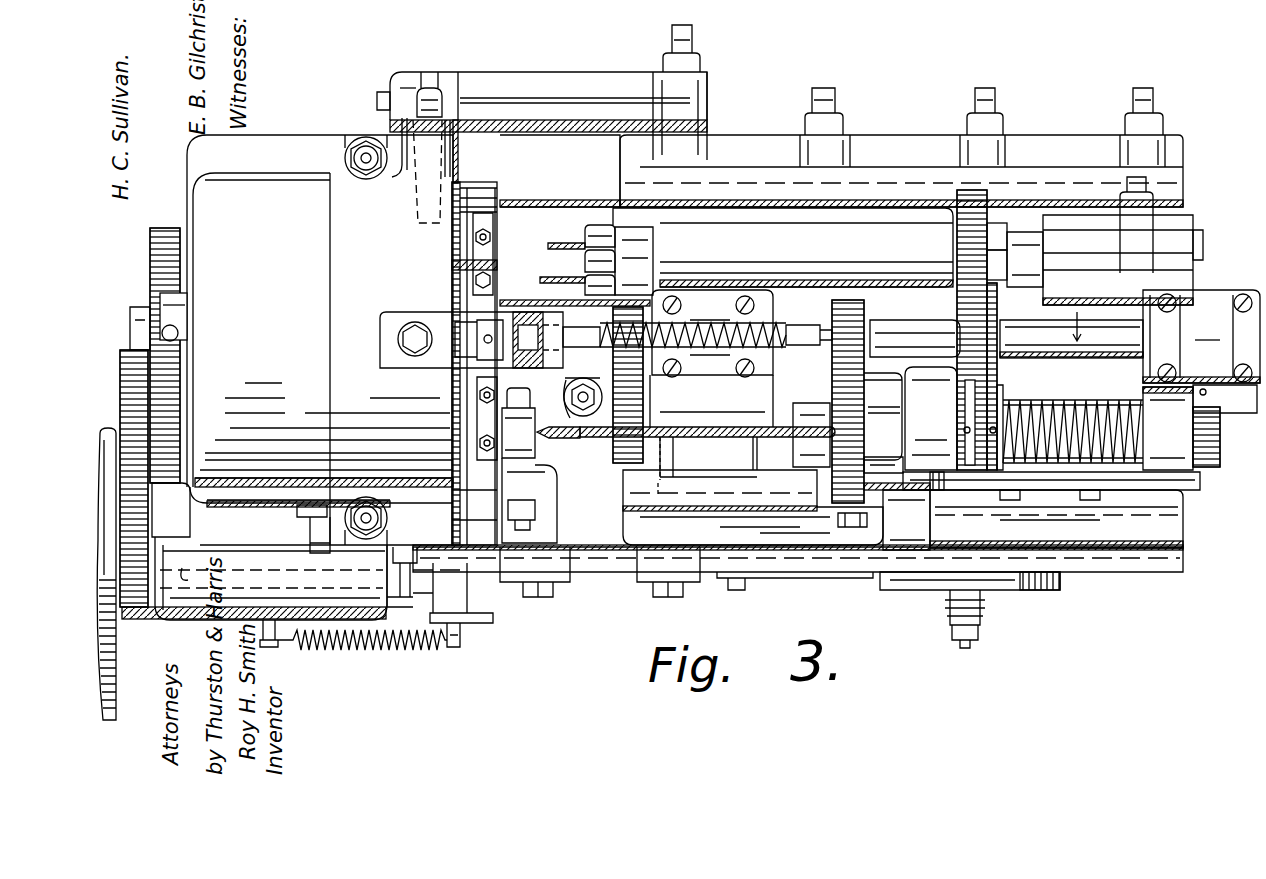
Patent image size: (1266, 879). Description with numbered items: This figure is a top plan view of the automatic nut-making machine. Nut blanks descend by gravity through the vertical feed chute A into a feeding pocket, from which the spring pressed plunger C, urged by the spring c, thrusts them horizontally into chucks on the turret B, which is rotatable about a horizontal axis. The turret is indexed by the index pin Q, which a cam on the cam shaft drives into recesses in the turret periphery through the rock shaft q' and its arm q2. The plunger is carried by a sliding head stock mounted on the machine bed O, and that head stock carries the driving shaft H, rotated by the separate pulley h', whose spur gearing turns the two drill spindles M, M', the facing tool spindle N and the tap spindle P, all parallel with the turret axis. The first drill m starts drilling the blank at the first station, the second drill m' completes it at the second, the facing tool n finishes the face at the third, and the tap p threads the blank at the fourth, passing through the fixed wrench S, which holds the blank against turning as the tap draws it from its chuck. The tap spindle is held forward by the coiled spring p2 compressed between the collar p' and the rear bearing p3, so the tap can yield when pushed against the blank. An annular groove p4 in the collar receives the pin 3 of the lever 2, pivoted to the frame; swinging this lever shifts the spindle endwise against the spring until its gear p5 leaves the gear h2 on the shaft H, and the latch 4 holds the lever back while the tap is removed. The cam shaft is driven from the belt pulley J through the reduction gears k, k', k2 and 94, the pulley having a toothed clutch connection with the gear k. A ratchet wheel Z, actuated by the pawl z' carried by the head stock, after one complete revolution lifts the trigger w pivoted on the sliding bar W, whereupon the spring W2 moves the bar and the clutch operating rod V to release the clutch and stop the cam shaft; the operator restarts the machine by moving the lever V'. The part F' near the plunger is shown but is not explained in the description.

The index pin Q is at (428, 72).
The arm q2 is at (445, 95).
The rock shaft q' is at (548, 97).
The turret B is at (480, 192).
The machine bed O is at (901, 316).
The drill spindle M is at (894, 241).
The second drill spindle M' is at (825, 260).
The first drill m is at (566, 230).
The second drill m' is at (562, 267).
The vertical feed chute A is at (526, 320).
The plunger C is at (580, 332).
The spring c is at (657, 383).
The block F' is at (724, 333).
The gear h2 is at (862, 322).
The pulley h' is at (1071, 325).
The gear k is at (254, 570).
The gear k' is at (122, 457).
The gear k2 is at (171, 510).
The reduction gear 94 is at (151, 268).
The belt pulley J is at (103, 430).
The facing tool spindle N is at (572, 390).
The facing tool n is at (566, 428).
The fixed wrench S is at (529, 465).
The tap p is at (703, 446).
The clutch operating rod V is at (403, 561).
The lever V' is at (456, 611).
The sliding bar W is at (607, 572).
The trigger w is at (778, 579).
The spring W2 is at (353, 646).
The tap spindle P is at (870, 406).
The gear p5 is at (897, 473).
The annular groove p4 is at (957, 397).
The collar p' is at (1010, 416).
The driving shaft H is at (1073, 415).
The coiled spring p2 is at (1078, 412).
The rear bearing p3 is at (1155, 412).
The lever 2 is at (938, 490).
The pin 3 is at (978, 478).
The latch 4 is at (1040, 500).
The ratchet wheel Z is at (1046, 578).
The pawl z' is at (940, 610).